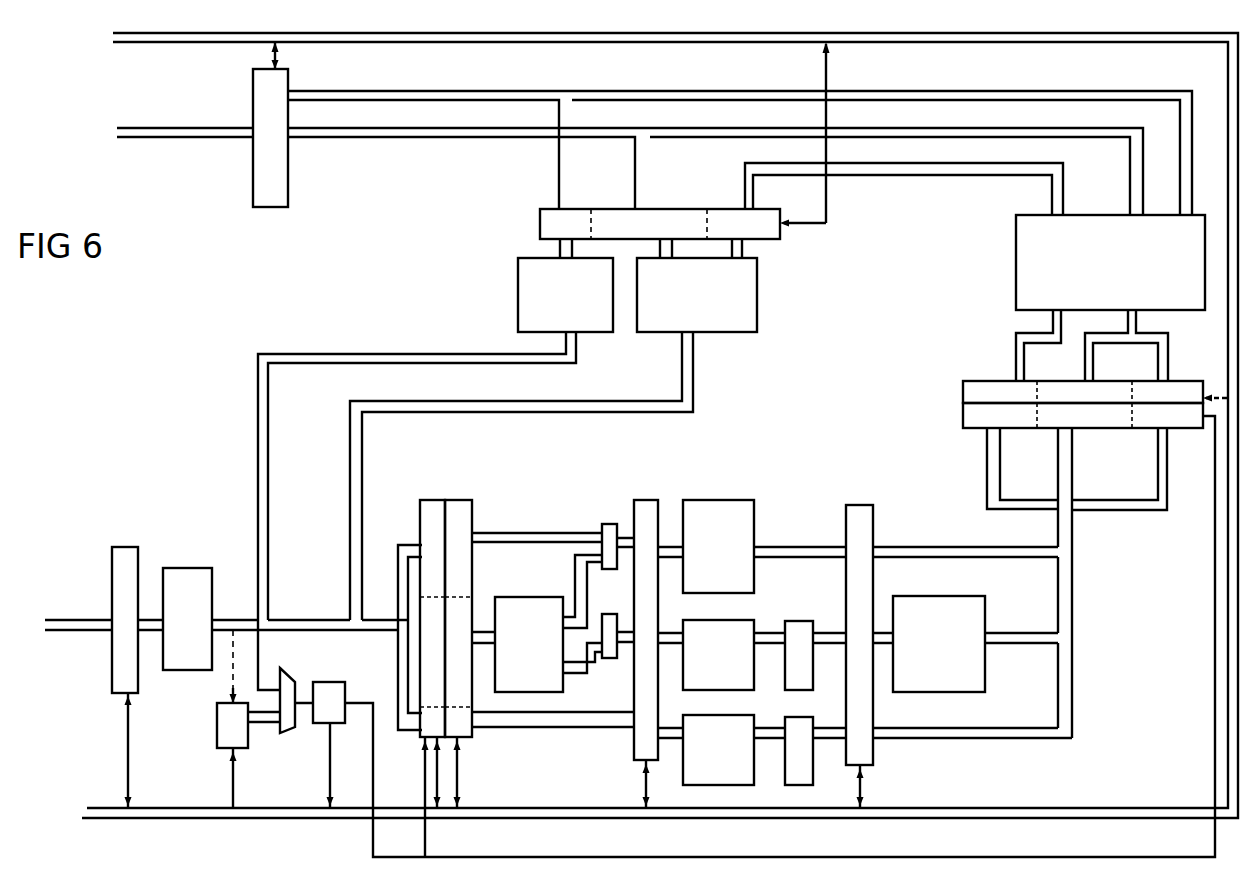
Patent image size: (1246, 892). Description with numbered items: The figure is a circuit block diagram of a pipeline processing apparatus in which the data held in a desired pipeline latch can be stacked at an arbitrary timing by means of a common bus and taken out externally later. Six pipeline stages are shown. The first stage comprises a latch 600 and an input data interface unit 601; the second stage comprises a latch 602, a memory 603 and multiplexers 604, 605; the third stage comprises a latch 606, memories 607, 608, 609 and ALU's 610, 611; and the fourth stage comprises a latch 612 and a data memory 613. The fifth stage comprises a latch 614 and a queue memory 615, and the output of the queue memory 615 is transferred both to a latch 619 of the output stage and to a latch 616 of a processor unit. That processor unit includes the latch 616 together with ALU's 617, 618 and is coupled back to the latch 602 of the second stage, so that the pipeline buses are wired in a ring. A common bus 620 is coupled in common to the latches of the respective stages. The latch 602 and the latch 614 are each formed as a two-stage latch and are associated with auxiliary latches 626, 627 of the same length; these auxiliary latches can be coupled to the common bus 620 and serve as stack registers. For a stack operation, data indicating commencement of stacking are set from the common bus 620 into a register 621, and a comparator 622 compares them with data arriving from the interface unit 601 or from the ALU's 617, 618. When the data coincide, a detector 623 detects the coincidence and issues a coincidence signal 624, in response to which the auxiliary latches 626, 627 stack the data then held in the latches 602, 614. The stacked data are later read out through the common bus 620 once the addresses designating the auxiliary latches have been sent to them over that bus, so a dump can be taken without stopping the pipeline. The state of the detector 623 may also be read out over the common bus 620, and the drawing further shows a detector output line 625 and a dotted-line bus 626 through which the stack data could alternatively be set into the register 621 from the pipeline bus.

The latch 600 is at (118, 547).
The input data interface unit 601 is at (191, 568).
The latch 602 is at (463, 500).
The memory 603 is at (518, 606).
The multiplexer 604 is at (603, 548).
The multiplexer 605 is at (592, 522).
The latch 606 is at (657, 500).
The memory 607 is at (708, 500).
The memory 608 is at (756, 622).
The memory 609 is at (757, 787).
The ALU 610 is at (810, 621).
The ALU 611 is at (812, 786).
The latch 612 is at (845, 517).
The data memory 613 is at (940, 596).
The latch 614 is at (962, 392).
The queue memory 615 is at (1012, 271).
The latch 616 is at (538, 225).
The ALU 617 is at (597, 335).
The ALU 618 is at (725, 335).
The latch 619 is at (252, 195).
The common bus 620 is at (198, 820).
The register 621 is at (217, 739).
The comparator 622 is at (287, 733).
The detector 623 is at (335, 686).
The coincidence signal 624 is at (487, 858).
The detect output line 625 is at (330, 762).
The auxiliary latch 626 is at (425, 500).
The auxiliary latch 627 is at (962, 418).